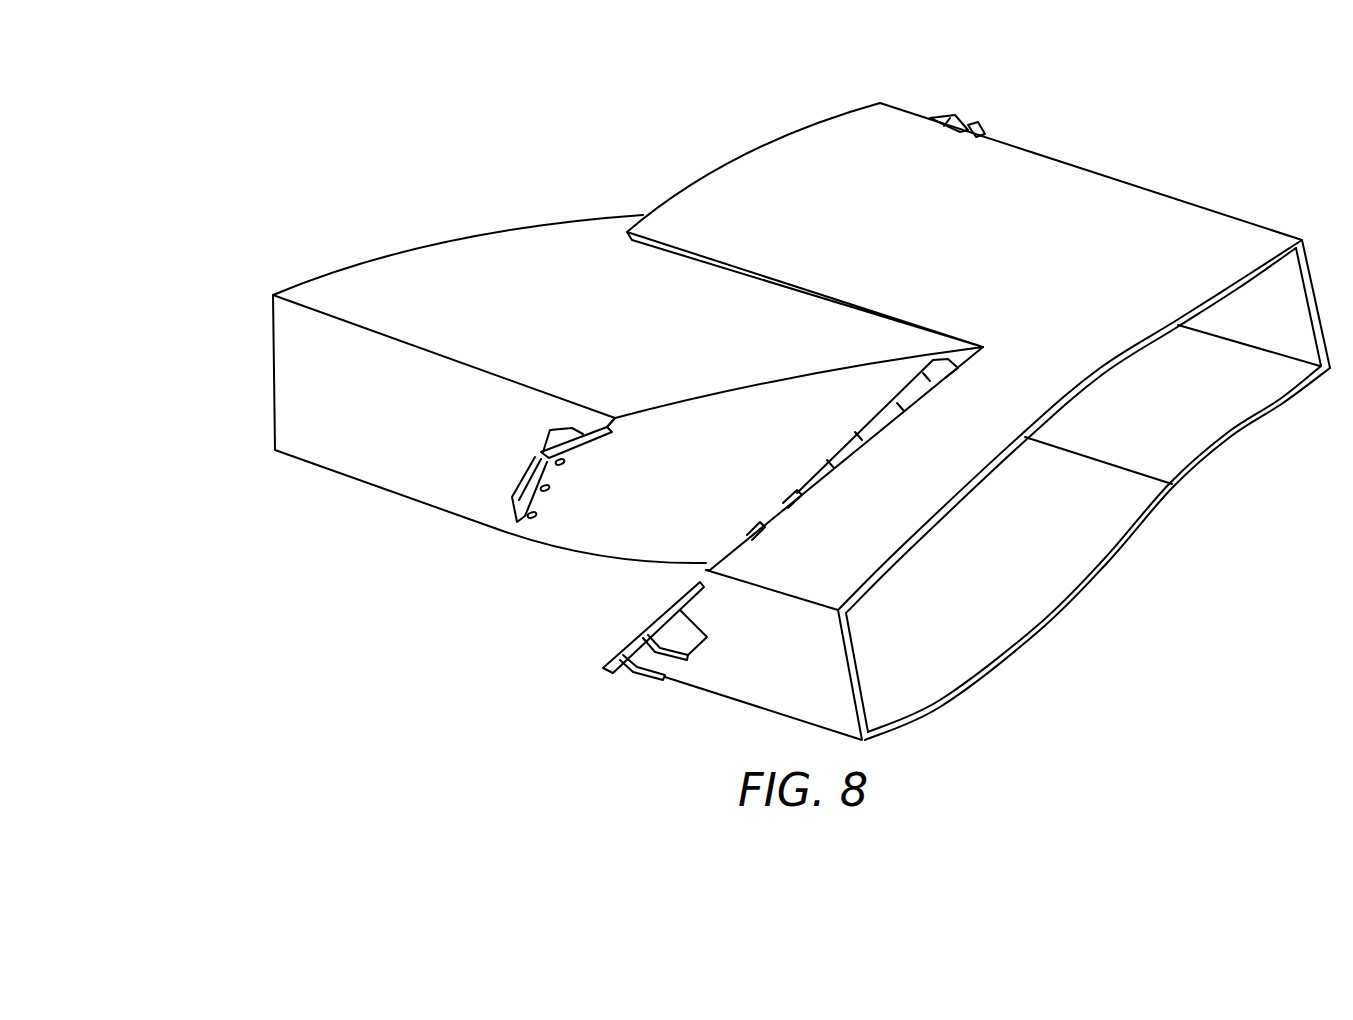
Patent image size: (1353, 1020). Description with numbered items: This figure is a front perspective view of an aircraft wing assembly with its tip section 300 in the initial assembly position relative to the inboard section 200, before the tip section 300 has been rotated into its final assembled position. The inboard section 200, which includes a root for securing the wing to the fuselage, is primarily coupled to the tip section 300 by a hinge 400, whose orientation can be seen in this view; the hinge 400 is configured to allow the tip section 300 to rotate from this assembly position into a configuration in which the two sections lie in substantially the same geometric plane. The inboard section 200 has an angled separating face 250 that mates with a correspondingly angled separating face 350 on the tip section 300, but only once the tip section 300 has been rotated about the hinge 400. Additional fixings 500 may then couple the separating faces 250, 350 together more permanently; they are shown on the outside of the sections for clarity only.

The inboard section 200 is at (473, 243).
The angled separating face 250 is at (587, 546).
The tip section 300 is at (1143, 196).
The angled separating face 350 is at (702, 578).
The hinge 400 is at (859, 424).
The fixings 500 is at (950, 114).